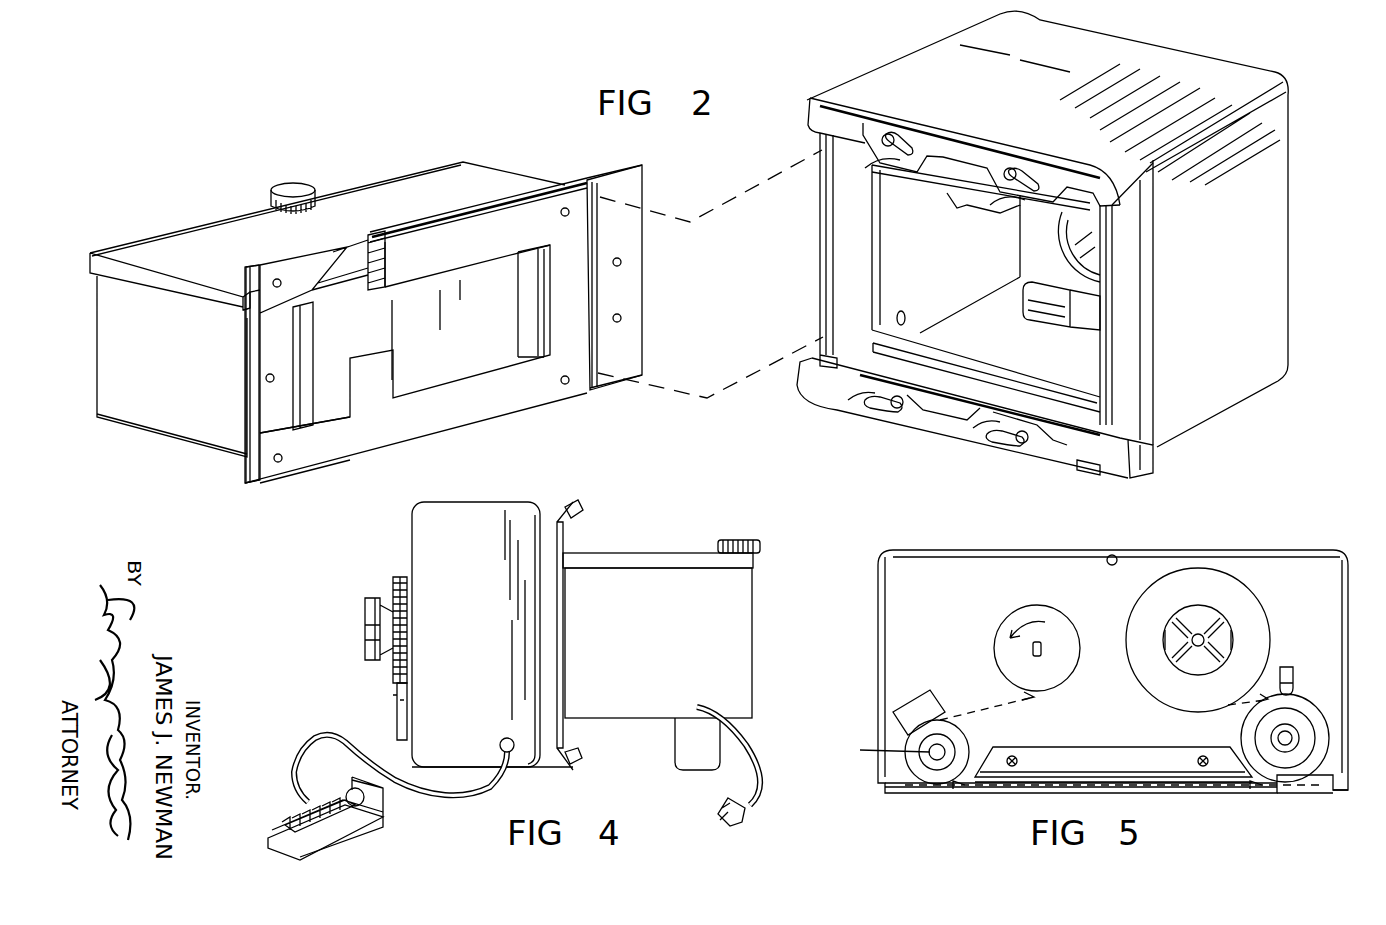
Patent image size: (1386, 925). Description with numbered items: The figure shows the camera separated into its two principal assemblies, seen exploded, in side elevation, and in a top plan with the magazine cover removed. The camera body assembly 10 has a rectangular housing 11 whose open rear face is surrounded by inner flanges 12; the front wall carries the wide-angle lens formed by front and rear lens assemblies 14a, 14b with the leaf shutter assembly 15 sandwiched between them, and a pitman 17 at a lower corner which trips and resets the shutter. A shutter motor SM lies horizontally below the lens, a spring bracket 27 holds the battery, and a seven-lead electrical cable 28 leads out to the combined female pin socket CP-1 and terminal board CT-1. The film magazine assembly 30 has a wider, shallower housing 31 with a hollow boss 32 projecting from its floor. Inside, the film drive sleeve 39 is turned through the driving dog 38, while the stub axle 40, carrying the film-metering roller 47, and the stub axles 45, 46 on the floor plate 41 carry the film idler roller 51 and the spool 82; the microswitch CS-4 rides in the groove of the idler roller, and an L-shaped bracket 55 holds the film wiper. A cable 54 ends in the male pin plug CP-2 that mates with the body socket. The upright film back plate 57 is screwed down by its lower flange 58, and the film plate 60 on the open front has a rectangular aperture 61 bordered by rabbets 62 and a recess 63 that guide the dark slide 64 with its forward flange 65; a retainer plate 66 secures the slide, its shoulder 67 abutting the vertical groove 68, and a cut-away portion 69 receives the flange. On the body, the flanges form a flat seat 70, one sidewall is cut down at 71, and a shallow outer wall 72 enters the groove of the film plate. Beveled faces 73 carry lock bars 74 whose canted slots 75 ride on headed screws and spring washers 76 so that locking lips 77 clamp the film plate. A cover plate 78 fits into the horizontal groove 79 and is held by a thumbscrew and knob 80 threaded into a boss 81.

In FIG. 2, the camera body assembly 10 is at (1095, 89).
In FIG. 4, the camera body assembly 10 is at (472, 643).
In FIG. 2, the housing 11 is at (1277, 333).
In FIG. 2, the inner flanges 12 is at (876, 232).
In FIG. 4, the front lens assembly 14a is at (363, 638).
In FIG. 2, the rear lens assembly 14b is at (1068, 240).
In FIG. 4, the leaf shutter assembly 15 is at (392, 585).
In FIG. 4, the pitman 17 is at (395, 720).
In FIG. 2, the spring bracket 27 is at (965, 212).
In FIG. 4, the electrical cable 28 is at (497, 785).
In FIG. 2, the film magazine assembly 30 is at (138, 398).
In FIG. 4, the film magazine assembly 30 is at (665, 653).
In FIG. 2, the housing 31 is at (192, 432).
In FIG. 5, the housing 31 is at (1250, 552).
In FIG. 4, the hollow boss 32 is at (680, 757).
In FIG. 5, the driving dog 38 is at (1042, 656).
In FIG. 5, the film drive sleeve 39 is at (1062, 622).
In FIG. 5, the stub axle 40 is at (1290, 732).
In FIG. 5, the floor plate 41 is at (1315, 591).
In FIG. 5, the stub axle 45 is at (880, 751).
In FIG. 5, the stub axle 46 is at (1192, 640).
In FIG. 5, the film-metering roller 47 is at (1243, 735).
In FIG. 5, the film idler roller 51 is at (962, 742).
In FIG. 4, the cable 54 is at (758, 738).
In FIG. 5, the L-shaped bracket 55 is at (1292, 667).
In FIG. 2, the film back plate 57 is at (530, 257).
In FIG. 5, the film back plate 57 is at (1085, 778).
In FIG. 5, the lower flange 58 is at (1048, 752).
In FIG. 2, the film plate 60 is at (288, 260).
In FIG. 4, the film plate 60 is at (565, 620).
In FIG. 5, the film plate 60 is at (1333, 793).
In FIG. 2, the rectangular aperture 61 is at (540, 318).
In FIG. 2, the rabbets 62 is at (373, 290).
In FIG. 2, the recess 63 is at (254, 383).
In FIG. 2, the dark slide 64 is at (436, 372).
In FIG. 2, the forward flange 65 is at (316, 334).
In FIG. 2, the retainer plate 66 is at (423, 232).
In FIG. 2, the shoulder 67 is at (594, 350).
In FIG. 2, the vertical groove 68 is at (592, 178).
In FIG. 2, the cut-away portion 69 is at (292, 432).
In FIG. 2, the flat seat 70 is at (945, 185).
In FIG. 2, the cut-down rear edge 71 is at (1145, 323).
In FIG. 2, the shallow outer wall 72 is at (822, 268).
In FIG. 2, the beveled faces 73 is at (815, 117).
In FIG. 2, the lock bars 74 is at (957, 150).
In FIG. 4, the lock bars 74 is at (583, 510).
In FIG. 2, the slots 75 is at (922, 140).
In FIG. 2, the headed screws and spring washers 76 is at (889, 133).
In FIG. 2, the locking lips 77 is at (900, 162).
In FIG. 2, the cover plate 78 is at (205, 228).
In FIG. 4, the cover plate 78 is at (646, 556).
In FIG. 2, the horizontal groove 79 is at (244, 282).
In FIG. 2, the thumbscrew and knob 80 is at (302, 182).
In FIG. 4, the thumbscrew and knob 80 is at (750, 539).
In FIG. 5, the boss 81 is at (1104, 566).
In FIG. 5, the spool 82 is at (1235, 632).
In FIG. 2, the shutter motor SM is at (1045, 310).
In FIG. 4, the female pin socket CP-1 is at (346, 790).
In FIG. 4, the male pin plug CP-2 is at (723, 823).
In FIG. 4, the terminal board CT-1 is at (355, 842).
In FIG. 5, the microswitch CS-4 is at (912, 700).